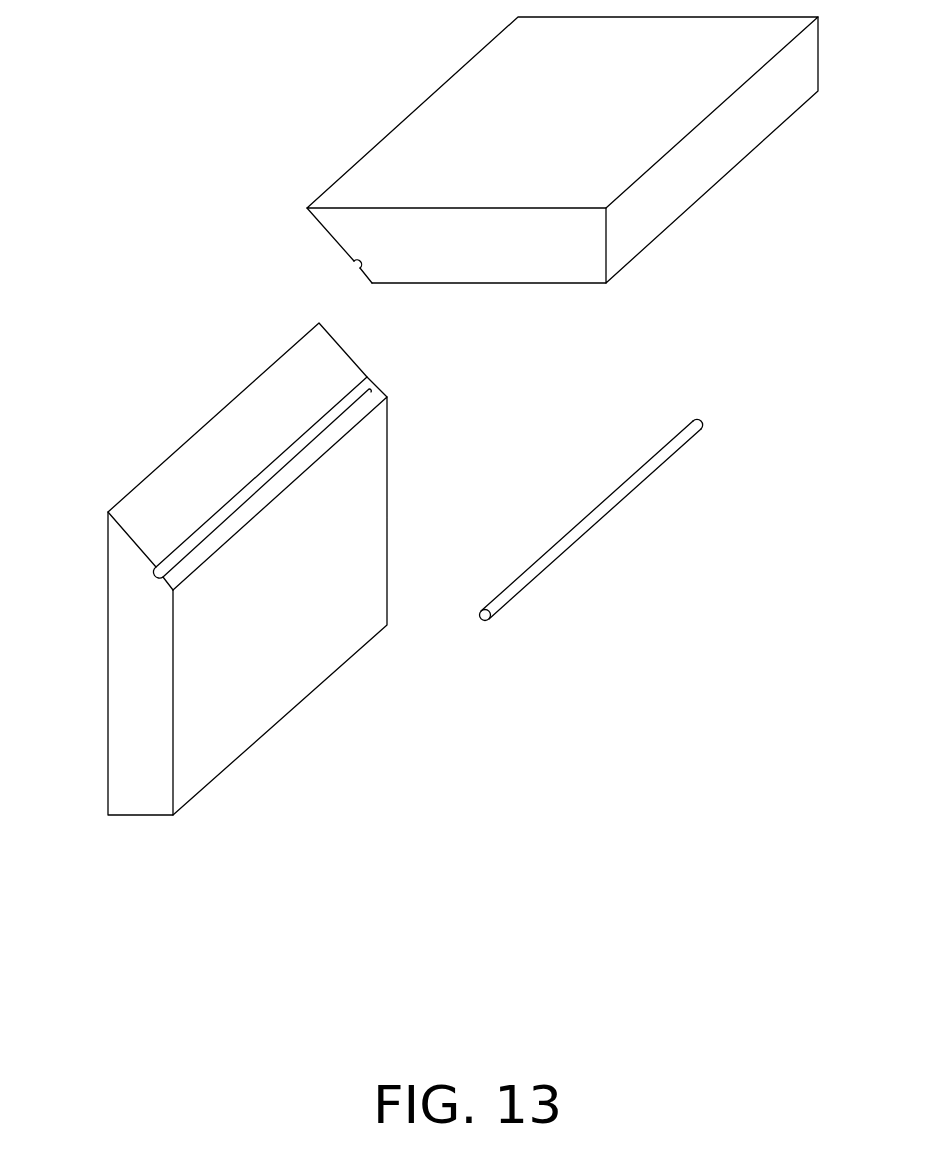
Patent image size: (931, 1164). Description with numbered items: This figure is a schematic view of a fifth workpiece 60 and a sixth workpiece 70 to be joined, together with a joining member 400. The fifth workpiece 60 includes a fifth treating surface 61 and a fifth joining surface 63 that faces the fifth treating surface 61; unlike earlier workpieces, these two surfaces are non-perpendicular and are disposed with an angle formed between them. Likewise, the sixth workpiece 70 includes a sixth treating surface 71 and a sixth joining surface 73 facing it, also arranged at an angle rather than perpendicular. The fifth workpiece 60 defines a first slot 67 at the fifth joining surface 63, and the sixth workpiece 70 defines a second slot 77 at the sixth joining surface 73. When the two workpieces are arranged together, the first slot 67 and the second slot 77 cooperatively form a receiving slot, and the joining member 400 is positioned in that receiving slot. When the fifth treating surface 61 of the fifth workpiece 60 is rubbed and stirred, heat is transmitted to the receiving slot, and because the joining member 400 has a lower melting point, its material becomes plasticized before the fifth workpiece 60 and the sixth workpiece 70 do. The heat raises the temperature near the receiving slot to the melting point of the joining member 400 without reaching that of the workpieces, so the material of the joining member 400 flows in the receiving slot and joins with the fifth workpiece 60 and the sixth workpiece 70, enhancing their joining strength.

The fifth workpiece 60 is at (520, 162).
The fifth treating surface 61 is at (482, 98).
The fifth joining surface 63 is at (325, 237).
The first slot 67 is at (359, 263).
The sixth workpiece 70 is at (244, 569).
The sixth treating surface 71 is at (107, 580).
The sixth joining surface 73 is at (217, 453).
The second slot 77 is at (368, 378).
The joining member 400 is at (632, 478).